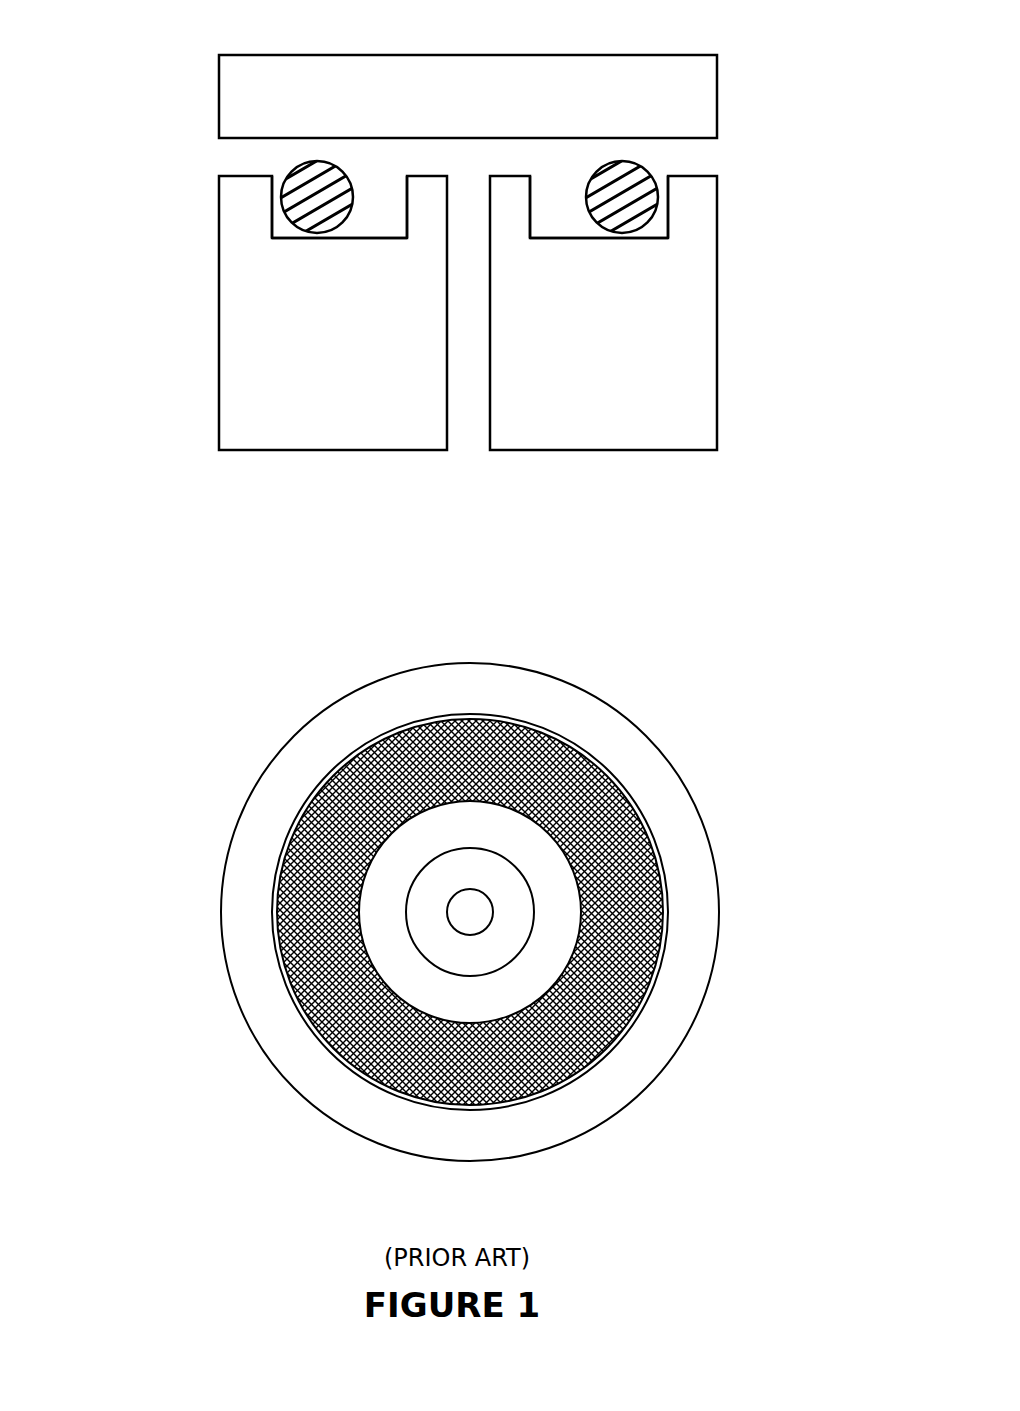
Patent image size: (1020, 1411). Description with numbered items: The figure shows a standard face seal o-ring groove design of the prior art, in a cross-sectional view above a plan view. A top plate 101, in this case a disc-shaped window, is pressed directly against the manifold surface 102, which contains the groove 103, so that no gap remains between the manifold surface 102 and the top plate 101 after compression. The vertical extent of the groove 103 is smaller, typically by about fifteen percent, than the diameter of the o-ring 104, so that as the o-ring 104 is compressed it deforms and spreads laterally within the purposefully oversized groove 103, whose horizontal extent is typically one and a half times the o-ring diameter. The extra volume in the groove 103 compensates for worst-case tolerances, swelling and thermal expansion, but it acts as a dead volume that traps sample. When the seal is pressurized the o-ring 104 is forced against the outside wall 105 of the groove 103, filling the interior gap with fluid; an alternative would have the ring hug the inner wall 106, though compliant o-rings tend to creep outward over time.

The top plate 101 is at (410, 55).
The manifold surface 102 is at (235, 175).
The groove 103 is at (540, 230).
The o-ring 104 is at (610, 202).
The outside wall 105 is at (272, 207).
The inner wall 106 is at (403, 208).